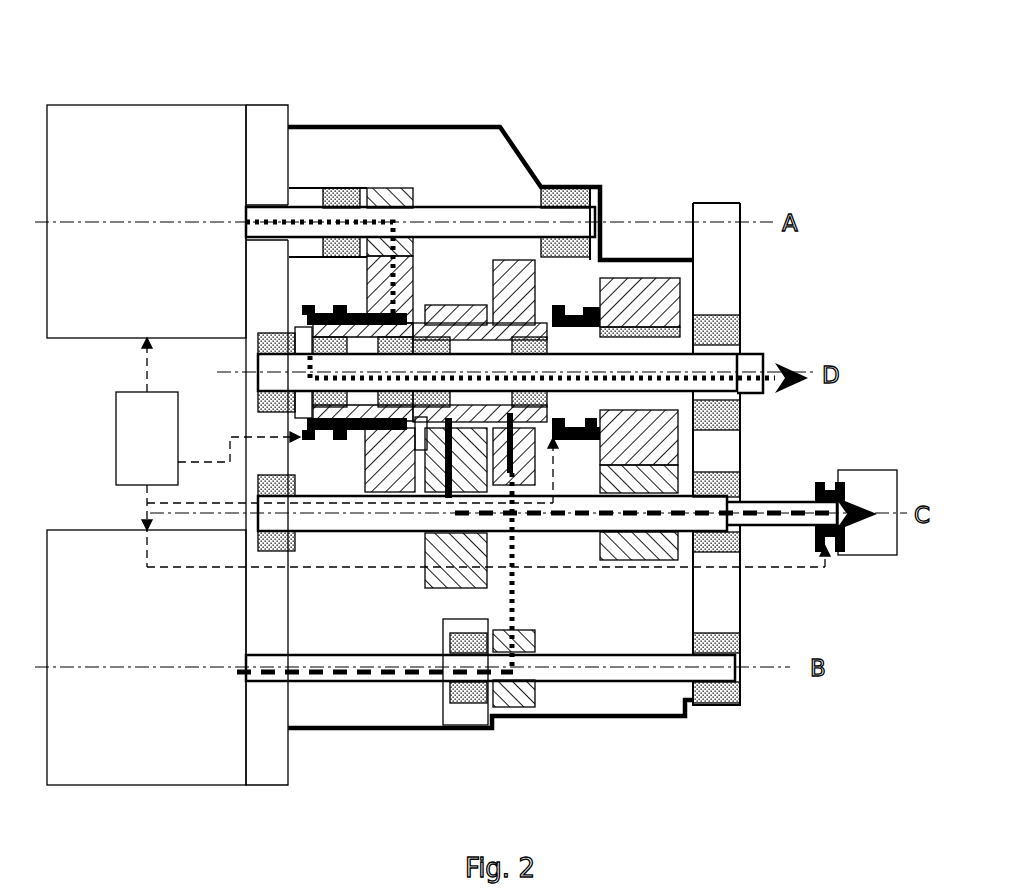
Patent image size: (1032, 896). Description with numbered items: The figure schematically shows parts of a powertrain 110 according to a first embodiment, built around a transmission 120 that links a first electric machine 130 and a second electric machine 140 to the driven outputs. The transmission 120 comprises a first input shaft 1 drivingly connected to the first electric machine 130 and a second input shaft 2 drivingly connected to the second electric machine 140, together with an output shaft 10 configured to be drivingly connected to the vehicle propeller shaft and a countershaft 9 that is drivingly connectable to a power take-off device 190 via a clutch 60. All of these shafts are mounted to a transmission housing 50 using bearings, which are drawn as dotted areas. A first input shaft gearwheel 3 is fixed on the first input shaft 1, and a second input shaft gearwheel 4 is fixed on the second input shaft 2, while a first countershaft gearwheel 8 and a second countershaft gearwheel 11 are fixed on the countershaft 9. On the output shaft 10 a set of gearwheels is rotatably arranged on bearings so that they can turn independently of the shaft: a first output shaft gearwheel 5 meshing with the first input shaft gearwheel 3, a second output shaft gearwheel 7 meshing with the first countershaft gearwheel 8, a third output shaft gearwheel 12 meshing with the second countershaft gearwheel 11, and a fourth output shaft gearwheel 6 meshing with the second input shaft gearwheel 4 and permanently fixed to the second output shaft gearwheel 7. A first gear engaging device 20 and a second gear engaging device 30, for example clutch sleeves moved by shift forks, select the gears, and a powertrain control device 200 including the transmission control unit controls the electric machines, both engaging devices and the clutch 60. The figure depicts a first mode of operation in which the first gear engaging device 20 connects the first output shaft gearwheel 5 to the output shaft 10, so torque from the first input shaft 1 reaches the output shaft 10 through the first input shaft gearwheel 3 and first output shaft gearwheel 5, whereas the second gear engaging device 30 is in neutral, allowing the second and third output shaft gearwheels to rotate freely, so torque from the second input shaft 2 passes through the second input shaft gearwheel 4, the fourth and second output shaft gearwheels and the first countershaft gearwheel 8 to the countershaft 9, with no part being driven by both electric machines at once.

The first input shaft 1 is at (522, 215).
The second input shaft 2 is at (575, 675).
The first input shaft gearwheel 3 is at (395, 190).
The second input shaft gearwheel 4 is at (510, 697).
The first output shaft gearwheel 5 is at (386, 492).
The fourth output shaft gearwheel 6 is at (497, 260).
The second output shaft gearwheel 7 is at (453, 310).
The first countershaft gearwheel 8 is at (438, 585).
The countershaft 9 is at (330, 528).
The output shaft 10 is at (588, 364).
The second countershaft gearwheel 11 is at (620, 562).
The third output shaft gearwheel 12 is at (648, 283).
The first gear engaging device 20 is at (298, 430).
The second gear engaging device 30 is at (585, 303).
The transmission housing 50 is at (437, 127).
The clutch 60 is at (817, 482).
The powertrain 110 is at (262, 80).
The transmission 120 is at (645, 118).
The first electric machine 130 is at (130, 193).
The second electric machine 140 is at (130, 620).
The power take-off device 190 is at (858, 475).
The powertrain control device 200 is at (125, 451).